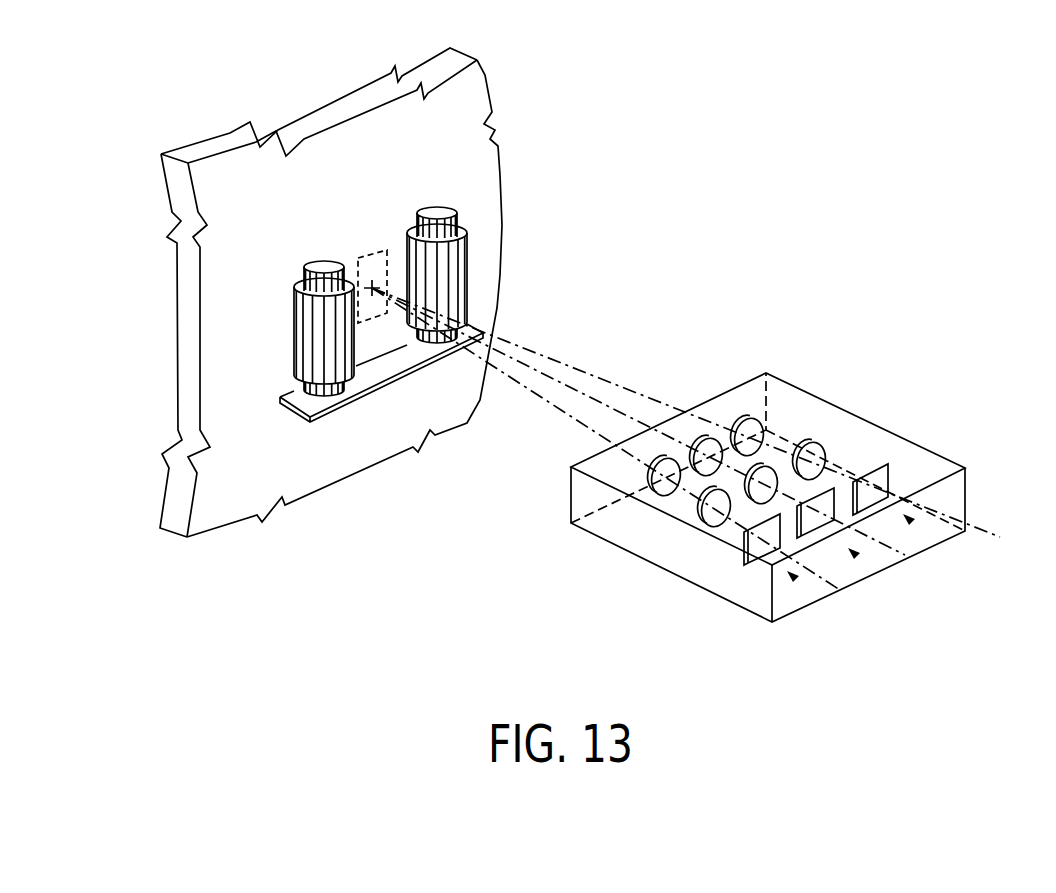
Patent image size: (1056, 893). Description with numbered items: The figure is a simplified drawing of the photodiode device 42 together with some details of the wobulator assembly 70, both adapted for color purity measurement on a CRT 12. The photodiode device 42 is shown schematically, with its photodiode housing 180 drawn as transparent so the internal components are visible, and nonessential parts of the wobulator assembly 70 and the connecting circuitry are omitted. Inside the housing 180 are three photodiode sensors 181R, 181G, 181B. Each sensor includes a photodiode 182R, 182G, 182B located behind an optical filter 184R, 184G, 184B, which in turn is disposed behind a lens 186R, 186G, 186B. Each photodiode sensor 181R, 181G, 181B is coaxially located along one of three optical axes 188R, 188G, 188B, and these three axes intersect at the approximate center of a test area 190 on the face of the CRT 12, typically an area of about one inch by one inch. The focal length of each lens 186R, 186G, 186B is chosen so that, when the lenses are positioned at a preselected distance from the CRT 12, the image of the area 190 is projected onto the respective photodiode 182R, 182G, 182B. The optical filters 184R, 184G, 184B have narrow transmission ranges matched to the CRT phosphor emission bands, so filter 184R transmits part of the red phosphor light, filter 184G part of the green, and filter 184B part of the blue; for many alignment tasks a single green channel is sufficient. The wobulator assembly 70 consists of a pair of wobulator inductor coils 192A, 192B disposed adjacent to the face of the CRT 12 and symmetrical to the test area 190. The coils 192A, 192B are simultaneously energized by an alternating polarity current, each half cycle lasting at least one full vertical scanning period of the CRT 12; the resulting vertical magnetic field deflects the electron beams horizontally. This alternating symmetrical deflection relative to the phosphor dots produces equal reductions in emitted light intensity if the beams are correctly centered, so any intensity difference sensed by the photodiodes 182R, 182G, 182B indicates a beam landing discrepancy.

The CRT 12 is at (487, 74).
The wobulator assembly 70 is at (411, 260).
The area 190 is at (366, 248).
The wobulator inductor coil 192A is at (467, 258).
The wobulator inductor coil 192B is at (296, 314).
The optical axis 188B is at (528, 388).
The optical axis 188G is at (567, 385).
The optical axis 188R is at (608, 381).
The photodiode device 42 is at (694, 477).
The photodiode housing 180 is at (966, 487).
The lens 186B is at (650, 477).
The lens 186G is at (695, 447).
The lens 186R is at (745, 416).
The optical filter 184B is at (698, 512).
The optical filter 184G is at (748, 483).
The optical filter 184R is at (812, 445).
The photodiode 182B is at (746, 548).
The photodiode 182G is at (793, 512).
The photodiode 182R is at (892, 478).
The photodiode sensor 181B is at (788, 572).
The photodiode sensor 181G is at (849, 549).
The photodiode sensor 181R is at (904, 515).